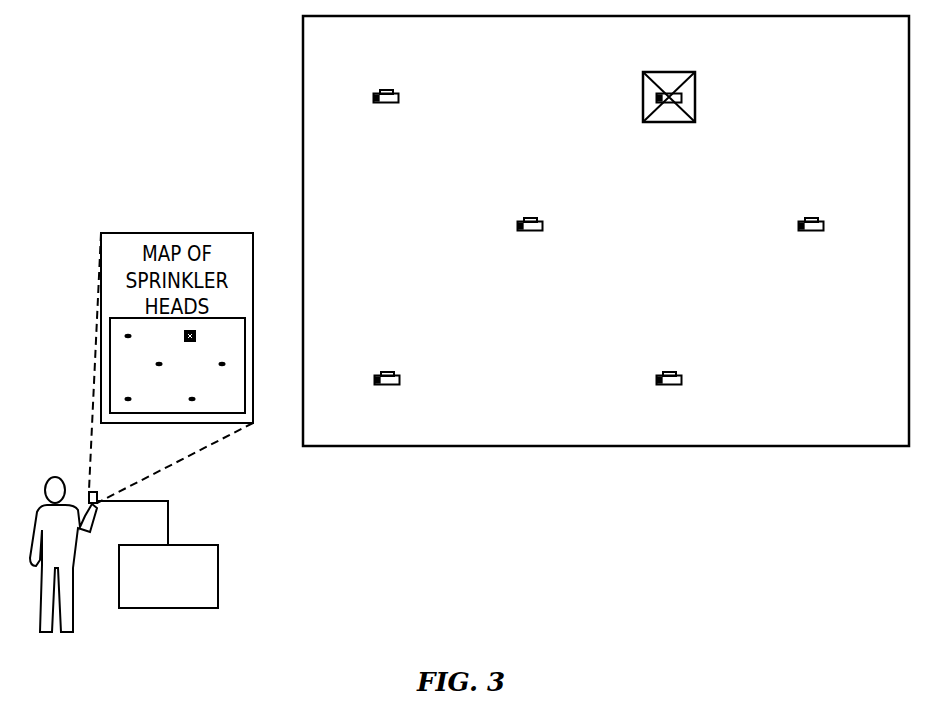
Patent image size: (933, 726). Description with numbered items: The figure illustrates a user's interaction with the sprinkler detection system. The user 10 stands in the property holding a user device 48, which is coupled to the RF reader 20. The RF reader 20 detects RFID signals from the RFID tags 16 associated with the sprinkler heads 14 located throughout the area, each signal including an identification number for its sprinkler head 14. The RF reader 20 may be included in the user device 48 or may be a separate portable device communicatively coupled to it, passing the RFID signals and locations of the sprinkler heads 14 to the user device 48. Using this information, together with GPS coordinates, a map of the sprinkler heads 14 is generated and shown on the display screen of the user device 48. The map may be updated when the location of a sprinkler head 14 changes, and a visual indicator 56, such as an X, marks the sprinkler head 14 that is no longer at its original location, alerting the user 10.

The user 10 is at (52, 477).
The sprinkler head 14 is at (390, 92).
The RFID tag 16 is at (375, 97).
The RF reader 20 is at (218, 571).
The user device 48 is at (96, 491).
The selected sprinkler head indicator 56 is at (670, 72).